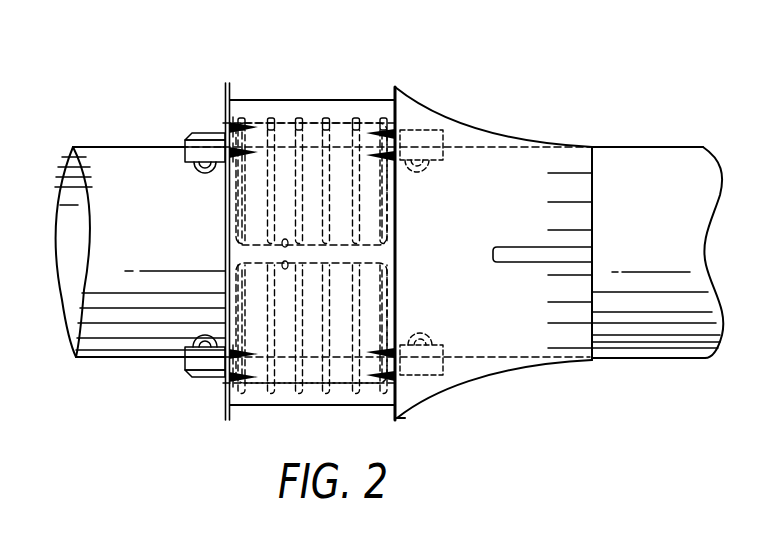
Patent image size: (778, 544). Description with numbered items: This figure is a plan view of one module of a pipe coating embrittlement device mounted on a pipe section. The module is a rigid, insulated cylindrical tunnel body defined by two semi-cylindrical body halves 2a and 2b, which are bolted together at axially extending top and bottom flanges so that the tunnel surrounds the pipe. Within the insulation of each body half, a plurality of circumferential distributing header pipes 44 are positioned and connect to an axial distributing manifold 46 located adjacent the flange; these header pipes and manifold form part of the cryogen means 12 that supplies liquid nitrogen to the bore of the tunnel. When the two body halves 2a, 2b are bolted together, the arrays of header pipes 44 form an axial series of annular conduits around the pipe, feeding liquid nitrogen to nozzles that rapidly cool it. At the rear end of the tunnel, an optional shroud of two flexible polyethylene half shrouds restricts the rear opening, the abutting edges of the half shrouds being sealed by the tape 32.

The semi-cylindrical body half 2a is at (216, 120).
The semi-cylindrical body half 2b is at (220, 396).
The cryogen supply means 12 is at (256, 233).
The tape 32 is at (516, 248).
The circumferential distributing header pipe 44 is at (307, 128).
The axial distributing manifold 46 is at (368, 240).